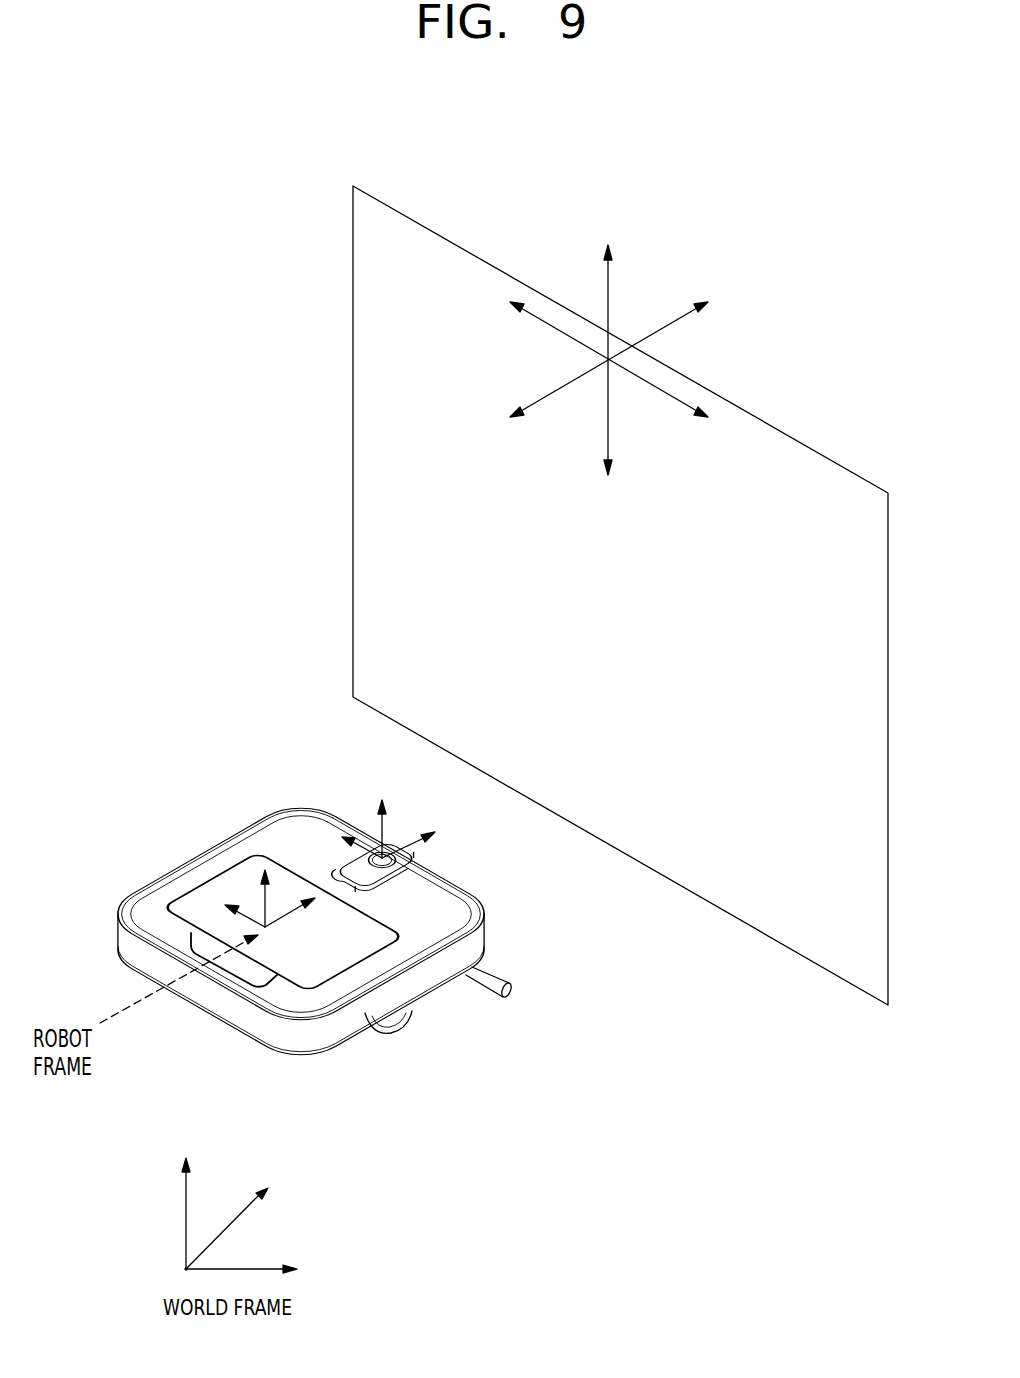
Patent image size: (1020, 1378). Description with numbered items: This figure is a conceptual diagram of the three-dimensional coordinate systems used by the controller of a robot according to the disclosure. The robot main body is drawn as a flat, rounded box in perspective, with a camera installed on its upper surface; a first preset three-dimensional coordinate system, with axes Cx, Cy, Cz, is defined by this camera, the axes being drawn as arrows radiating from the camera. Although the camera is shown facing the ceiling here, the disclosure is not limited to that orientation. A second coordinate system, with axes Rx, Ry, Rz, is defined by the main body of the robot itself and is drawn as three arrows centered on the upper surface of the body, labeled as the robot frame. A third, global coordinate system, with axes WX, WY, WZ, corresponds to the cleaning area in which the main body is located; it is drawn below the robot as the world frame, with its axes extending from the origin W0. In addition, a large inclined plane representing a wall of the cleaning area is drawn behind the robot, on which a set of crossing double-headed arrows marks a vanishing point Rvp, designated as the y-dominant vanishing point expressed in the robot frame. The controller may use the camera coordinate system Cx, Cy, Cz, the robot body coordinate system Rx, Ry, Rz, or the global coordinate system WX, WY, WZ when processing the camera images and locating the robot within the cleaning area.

The y-dominant vanishing point in robot frame Rvp is at (638, 360).
The camera coordinate system x axis Cx is at (348, 839).
The camera coordinate system y axis Cy is at (385, 815).
The camera coordinate system z axis Cz is at (419, 834).
The robot main body coordinate system x axis Rx is at (303, 914).
The robot main body coordinate system y axis Ry is at (231, 910).
The robot main body coordinate system z axis Rz is at (254, 896).
The global coordinate system x axis WX is at (261, 1278).
The global coordinate system y axis WY is at (239, 1222).
The global coordinate system z axis WZ is at (186, 1199).
The world frame origin W0 is at (172, 1271).